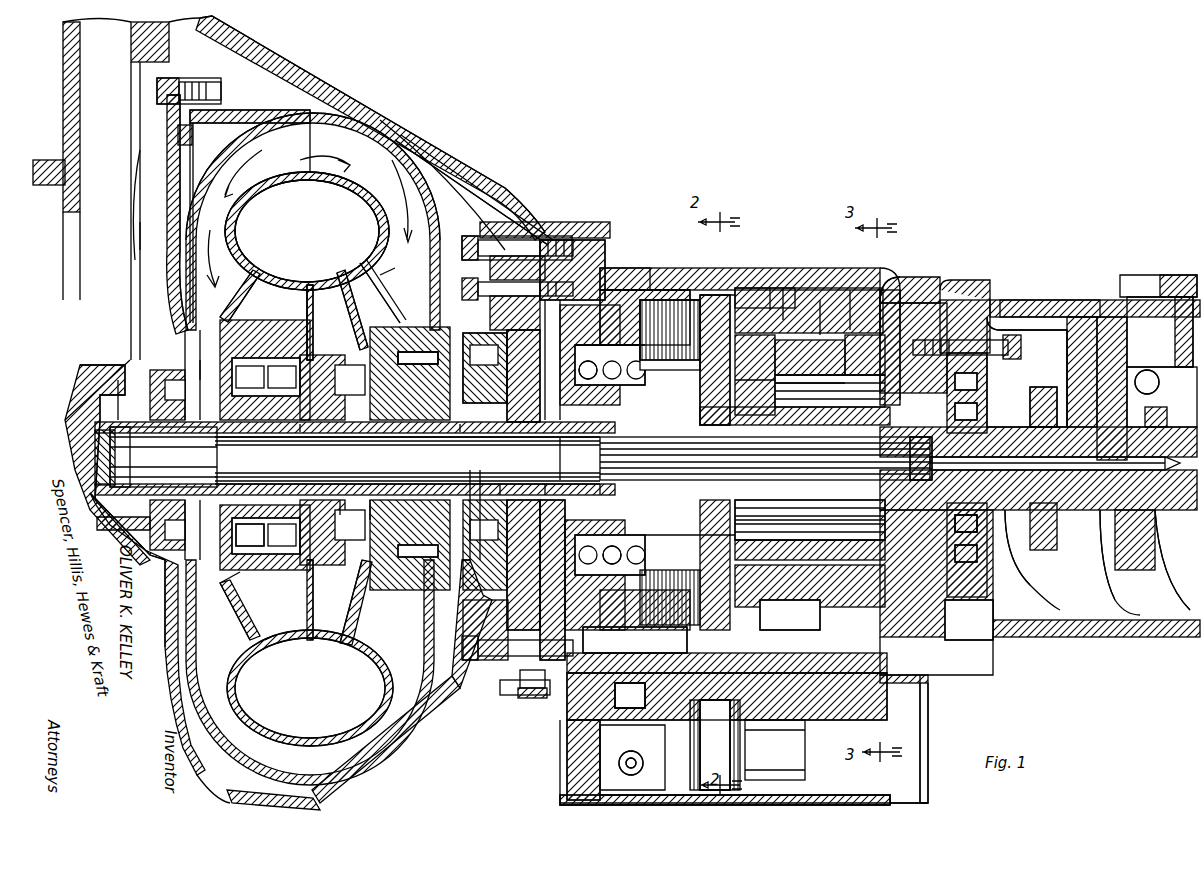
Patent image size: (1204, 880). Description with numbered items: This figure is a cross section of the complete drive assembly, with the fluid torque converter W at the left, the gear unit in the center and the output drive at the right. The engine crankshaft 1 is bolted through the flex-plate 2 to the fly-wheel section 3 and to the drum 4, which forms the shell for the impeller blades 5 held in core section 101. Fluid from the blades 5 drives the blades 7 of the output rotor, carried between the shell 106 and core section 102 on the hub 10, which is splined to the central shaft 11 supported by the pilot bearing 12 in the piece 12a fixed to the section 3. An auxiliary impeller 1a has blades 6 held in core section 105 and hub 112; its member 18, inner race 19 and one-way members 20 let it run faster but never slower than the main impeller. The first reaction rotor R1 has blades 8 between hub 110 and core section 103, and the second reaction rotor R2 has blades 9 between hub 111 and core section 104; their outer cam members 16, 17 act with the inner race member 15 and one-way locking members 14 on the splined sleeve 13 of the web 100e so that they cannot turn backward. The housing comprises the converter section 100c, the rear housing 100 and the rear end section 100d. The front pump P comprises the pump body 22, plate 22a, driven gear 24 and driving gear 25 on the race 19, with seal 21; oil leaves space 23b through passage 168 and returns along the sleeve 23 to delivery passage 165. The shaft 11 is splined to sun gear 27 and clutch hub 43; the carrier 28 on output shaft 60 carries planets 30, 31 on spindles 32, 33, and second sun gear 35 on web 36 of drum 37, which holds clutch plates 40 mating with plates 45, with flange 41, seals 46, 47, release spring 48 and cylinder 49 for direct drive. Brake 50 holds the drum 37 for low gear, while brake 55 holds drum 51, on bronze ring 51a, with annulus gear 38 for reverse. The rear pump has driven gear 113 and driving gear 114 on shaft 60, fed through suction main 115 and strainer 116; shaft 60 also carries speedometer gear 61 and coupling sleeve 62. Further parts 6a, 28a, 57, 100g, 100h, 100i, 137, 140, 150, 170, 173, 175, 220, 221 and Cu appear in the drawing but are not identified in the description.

The engine crankshaft 1 is at (118, 380).
The auxiliary impeller 1a is at (380, 298).
The flex-plate 2 is at (140, 224).
The fly-wheel section 3 is at (185, 150).
The drum 4 is at (232, 108).
The impeller blades 5 is at (452, 192).
The auxiliary impeller blades 6 is at (878, 292).
The flow passage 6a is at (412, 250).
The output rotor blades 7 is at (180, 258).
The first reaction rotor blades 8 is at (270, 642).
The second reaction rotor blades 9 is at (312, 640).
The hub 10 is at (205, 362).
The shaft 11 is at (118, 445).
The pilot bearing 12 is at (122, 512).
The supporting piece 12a is at (115, 440).
The cylindrical sleeve portion 13 is at (430, 428).
The one-way device locking members 14 is at (255, 505).
The inner race member 15 is at (300, 424).
The outer cam member 16 is at (255, 522).
The outer cam member 17 is at (232, 576).
The one-way device member 18 is at (314, 360).
The inner race 19 is at (372, 498).
The one-way device members 20 is at (340, 498).
The seal 21 is at (465, 562).
The pump body 22 is at (468, 372).
The plate 22a is at (508, 238).
The axial sleeve 23 is at (536, 440).
The space 23b is at (555, 425).
The driven pump gear 24 is at (510, 340).
The driving pump gear 25 is at (465, 424).
The sun gear 27 is at (850, 512).
The carrier 28 is at (904, 300).
The cylinder 28a is at (745, 292).
The planets 30 is at (790, 522).
The planets 31 is at (770, 290).
The spindle 32 is at (910, 462).
The spindle 33 is at (815, 376).
The second sun gear 35 is at (785, 380).
The radial web 36 is at (752, 380).
The drum 37 is at (710, 295).
The annulus gear 38 is at (820, 300).
The clutch plates 40 is at (660, 300).
The keyed flange 41 is at (650, 538).
The clutch hub 43 is at (630, 380).
The clutch plates 45 is at (640, 350).
The seal member 46 is at (660, 300).
The seal member 47 is at (640, 555).
The clutch release spring 48 is at (570, 570).
The cylinder 49 is at (560, 596).
The brake member 50 is at (672, 298).
The drum 51 is at (785, 290).
The bronze ring 51a is at (898, 292).
The brake 55 is at (850, 292).
The drum web 57 is at (720, 290).
The output shaft 60 is at (1120, 505).
The speedometer gear 61 is at (1165, 540).
The universal joint coupling sleeve 62 is at (1170, 455).
The housing 100 is at (605, 268).
The converter housing section 100c is at (410, 143).
The rear end section 100d is at (1035, 300).
The web 100e is at (542, 240).
The pan bottom 100g is at (570, 796).
The pan wall 100h is at (590, 722).
The housing 100i is at (822, 706).
The core section 101 is at (356, 190).
The core section 102 is at (262, 185).
The core section 103 is at (262, 262).
The core section 104 is at (310, 285).
The core section 105 is at (345, 273).
The shell 106 is at (262, 128).
The hub member 110 is at (240, 600).
The hub member 111 is at (330, 570).
The hub member 112 is at (372, 580).
The driven gear 113 is at (1000, 370).
The driving gear 114 is at (1030, 390).
The suction main 115 is at (705, 725).
The strainer 116 is at (890, 796).
The passage 137 is at (625, 620).
The shaft 140 is at (592, 424).
The pump 150 is at (618, 764).
The delivery passage 165 is at (620, 484).
The passage 168 is at (508, 424).
The passage 170 is at (1050, 560).
The hole 173 is at (1147, 370).
The passage 175 is at (1085, 410).
The bearing 220 is at (990, 540).
The passage 221 is at (615, 700).
The first reaction rotor R1 is at (242, 302).
The second reaction rotor R2 is at (335, 310).
The front pump P is at (460, 355).
The fluid torque converter W is at (345, 108).
The cup Cu is at (642, 763).